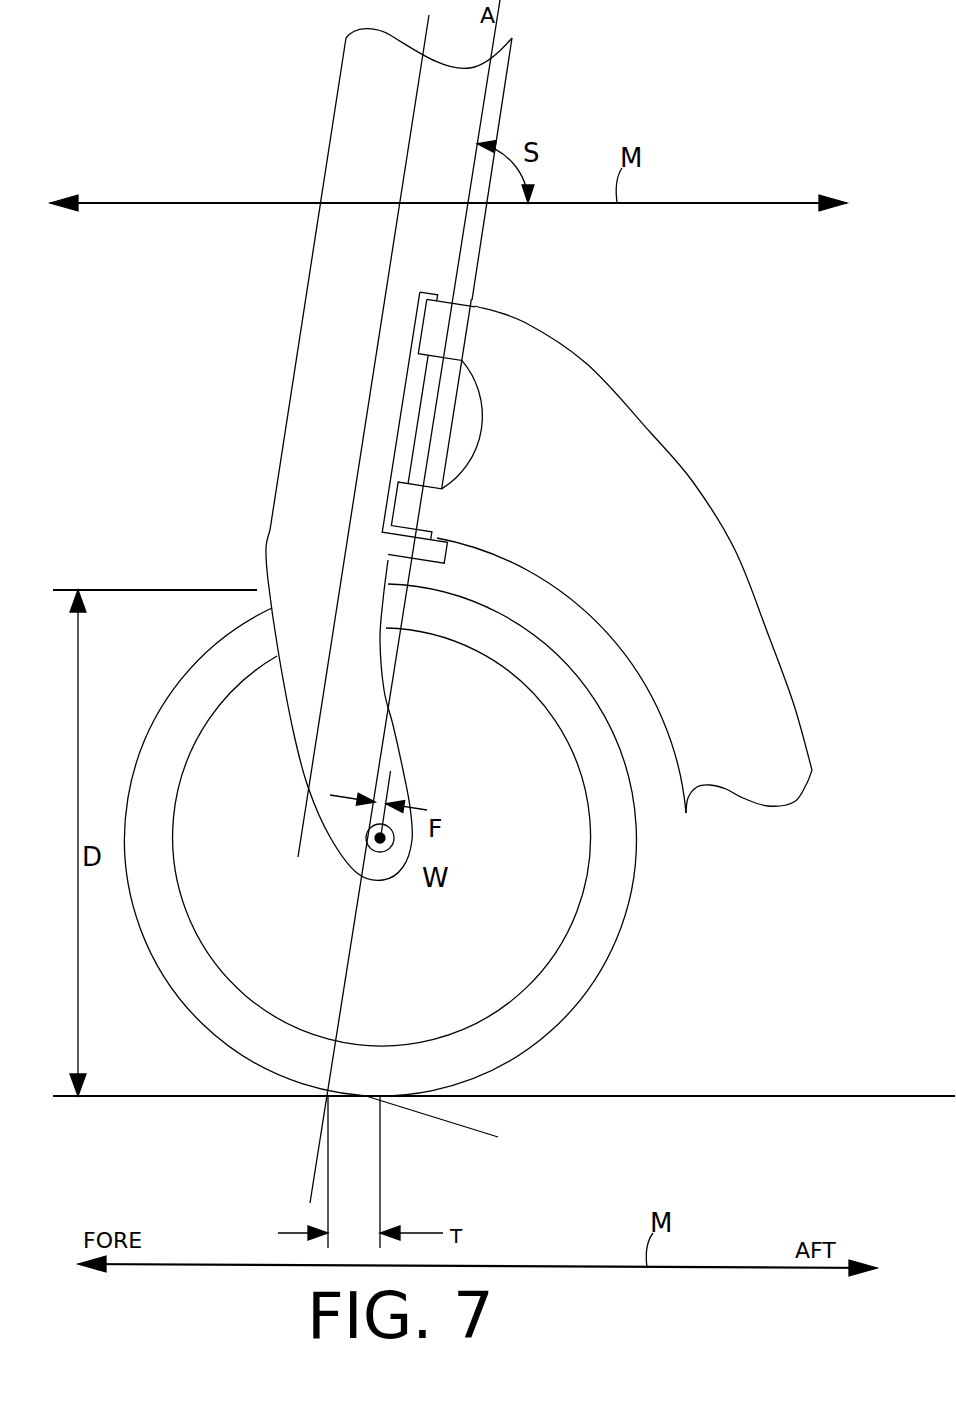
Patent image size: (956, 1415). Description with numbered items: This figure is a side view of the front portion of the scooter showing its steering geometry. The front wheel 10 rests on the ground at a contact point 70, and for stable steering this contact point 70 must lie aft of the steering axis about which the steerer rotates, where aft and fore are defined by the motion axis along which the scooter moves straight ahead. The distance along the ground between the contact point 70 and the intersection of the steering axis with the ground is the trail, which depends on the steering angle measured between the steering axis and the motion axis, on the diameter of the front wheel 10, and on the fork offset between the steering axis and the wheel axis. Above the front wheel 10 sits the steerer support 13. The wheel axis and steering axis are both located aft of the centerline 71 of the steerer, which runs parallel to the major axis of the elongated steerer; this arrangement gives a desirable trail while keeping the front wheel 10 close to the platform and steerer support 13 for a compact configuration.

The front wheel 10 is at (607, 868).
The steerer support 13 is at (665, 453).
The contact point 70 is at (451, 1134).
The centerline 71 is at (412, 122).